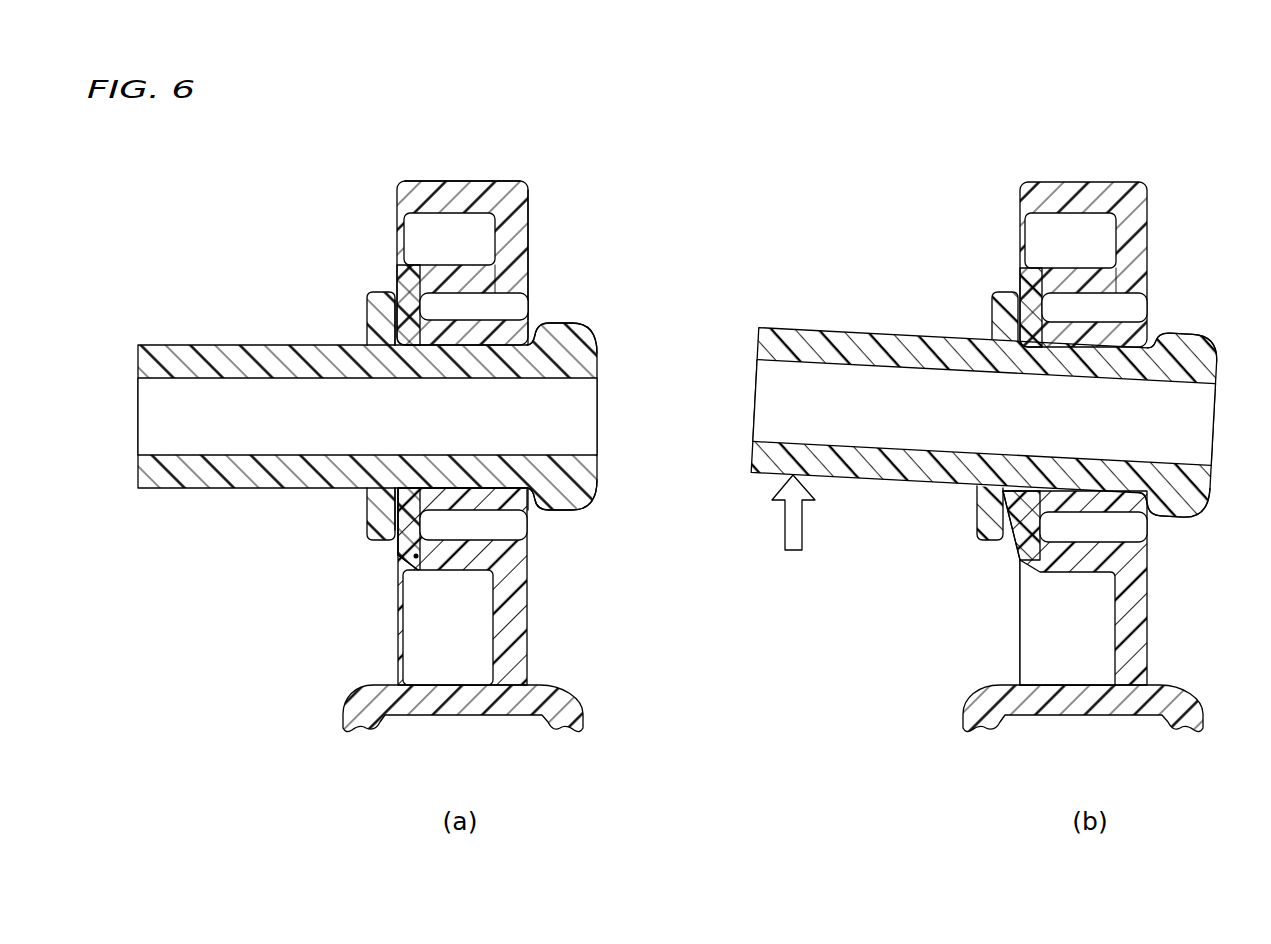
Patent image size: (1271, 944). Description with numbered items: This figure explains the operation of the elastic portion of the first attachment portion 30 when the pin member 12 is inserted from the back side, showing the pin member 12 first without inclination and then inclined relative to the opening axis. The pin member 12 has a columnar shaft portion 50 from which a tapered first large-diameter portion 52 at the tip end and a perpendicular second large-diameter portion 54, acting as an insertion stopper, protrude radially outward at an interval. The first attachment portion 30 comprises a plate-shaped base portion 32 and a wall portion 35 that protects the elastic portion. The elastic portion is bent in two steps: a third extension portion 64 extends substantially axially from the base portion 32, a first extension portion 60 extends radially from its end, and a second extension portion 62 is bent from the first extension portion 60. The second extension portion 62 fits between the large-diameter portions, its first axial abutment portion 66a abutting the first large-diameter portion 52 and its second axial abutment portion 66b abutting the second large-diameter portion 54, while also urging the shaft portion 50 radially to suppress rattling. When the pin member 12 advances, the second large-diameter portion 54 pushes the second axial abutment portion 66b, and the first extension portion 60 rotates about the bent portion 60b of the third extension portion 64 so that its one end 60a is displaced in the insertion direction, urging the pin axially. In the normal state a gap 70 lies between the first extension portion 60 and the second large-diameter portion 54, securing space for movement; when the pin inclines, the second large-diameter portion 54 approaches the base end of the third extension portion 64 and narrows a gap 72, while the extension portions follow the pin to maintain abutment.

The pin member 12 is at (200, 343).
The first attachment portion 30 is at (487, 179).
The base portion 32 is at (532, 218).
The wall portion 35 is at (442, 180).
The shaft portion 50 is at (470, 358).
The first large-diameter portion 52 is at (547, 323).
The second large-diameter portion 54 is at (380, 300).
The first extension portion 60 is at (410, 286).
The one end of the first extension portion 60a is at (400, 492).
The bent portion 60b is at (416, 559).
The second extension portion 62 is at (492, 316).
The third extension portion 64 is at (435, 262).
The first axial abutment portion 66a is at (545, 322).
The second axial abutment portion 66b is at (378, 345).
The gap 70 is at (391, 553).
The gap 72 is at (536, 510).